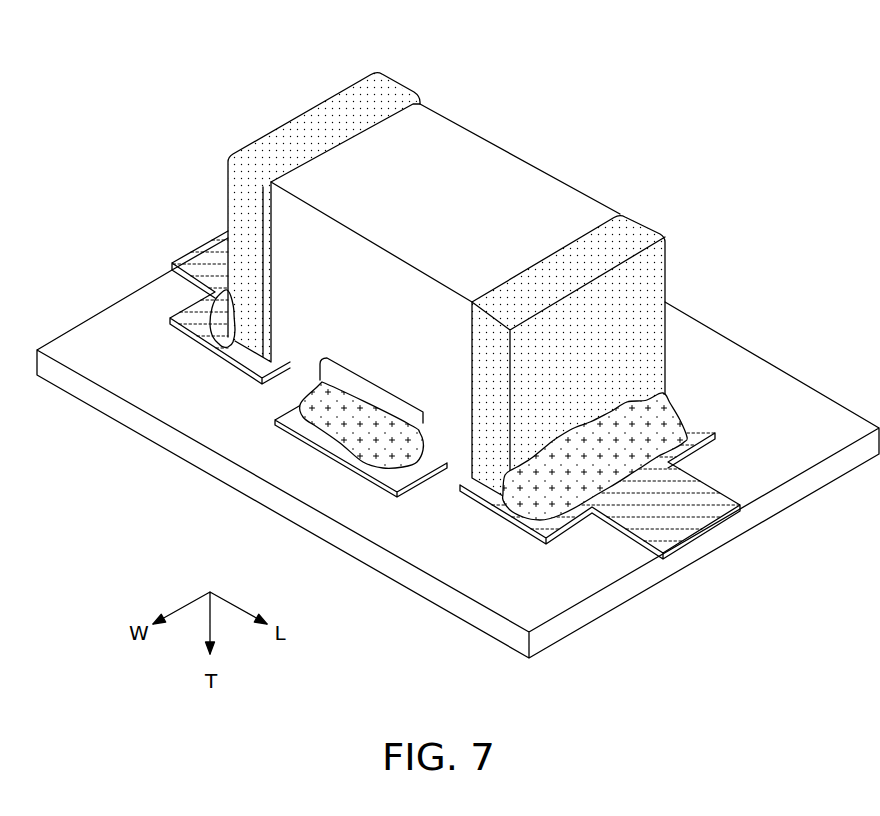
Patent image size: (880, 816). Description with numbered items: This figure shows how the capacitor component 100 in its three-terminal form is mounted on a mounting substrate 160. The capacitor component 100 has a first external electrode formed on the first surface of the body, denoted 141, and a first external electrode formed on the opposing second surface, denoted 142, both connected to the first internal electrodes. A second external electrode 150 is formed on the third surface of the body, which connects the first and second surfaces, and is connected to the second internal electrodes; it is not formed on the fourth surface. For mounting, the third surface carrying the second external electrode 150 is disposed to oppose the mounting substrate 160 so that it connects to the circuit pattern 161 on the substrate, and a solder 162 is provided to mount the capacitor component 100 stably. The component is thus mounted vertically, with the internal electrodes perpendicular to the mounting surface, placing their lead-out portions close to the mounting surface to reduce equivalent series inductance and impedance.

The capacitor component 100 is at (473, 123).
The first external electrode formed on the first surface 141 is at (335, 108).
The first external electrode formed on the second surface 142 is at (633, 230).
The second external electrode 150 is at (320, 380).
The mounting substrate 160 is at (130, 330).
The circuit pattern 161 is at (702, 500).
The solder 162 is at (660, 427).